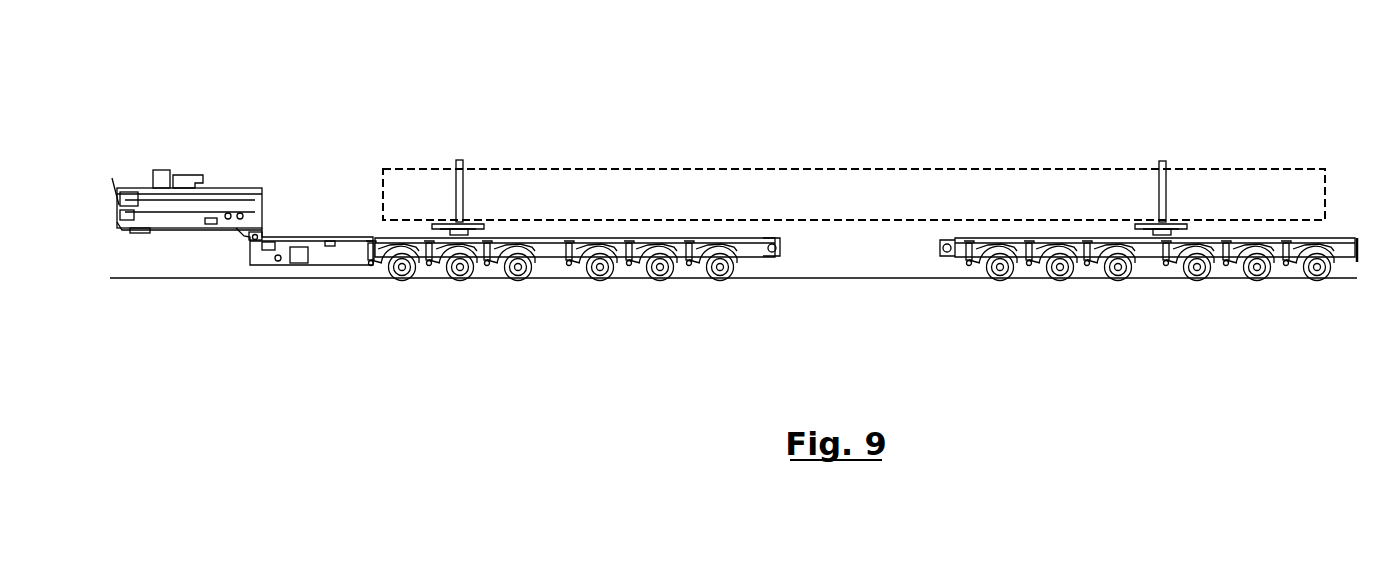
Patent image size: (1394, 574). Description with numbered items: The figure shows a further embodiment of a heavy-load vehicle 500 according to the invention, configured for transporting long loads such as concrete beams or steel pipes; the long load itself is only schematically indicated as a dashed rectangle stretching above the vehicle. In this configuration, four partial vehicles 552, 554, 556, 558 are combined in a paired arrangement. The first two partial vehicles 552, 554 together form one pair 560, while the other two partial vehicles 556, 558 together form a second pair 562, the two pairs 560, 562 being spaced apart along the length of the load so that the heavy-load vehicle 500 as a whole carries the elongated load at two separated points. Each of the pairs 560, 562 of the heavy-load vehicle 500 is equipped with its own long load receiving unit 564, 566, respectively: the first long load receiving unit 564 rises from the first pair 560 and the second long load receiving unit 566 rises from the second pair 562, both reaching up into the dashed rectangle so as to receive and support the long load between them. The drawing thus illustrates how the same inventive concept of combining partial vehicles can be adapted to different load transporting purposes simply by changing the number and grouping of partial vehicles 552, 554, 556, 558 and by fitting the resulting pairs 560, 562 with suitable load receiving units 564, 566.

The heavy-load vehicle 500 is at (298, 130).
The partial vehicle 552 is at (475, 252).
The partial vehicle 554 is at (622, 252).
The partial vehicle 556 is at (1080, 257).
The partial vehicle 558 is at (1277, 250).
The pair of partial vehicles 560 is at (423, 342).
The pair of partial vehicles 562 is at (1047, 342).
The long load receiving unit 564 is at (460, 180).
The long load receiving unit 566 is at (1160, 180).